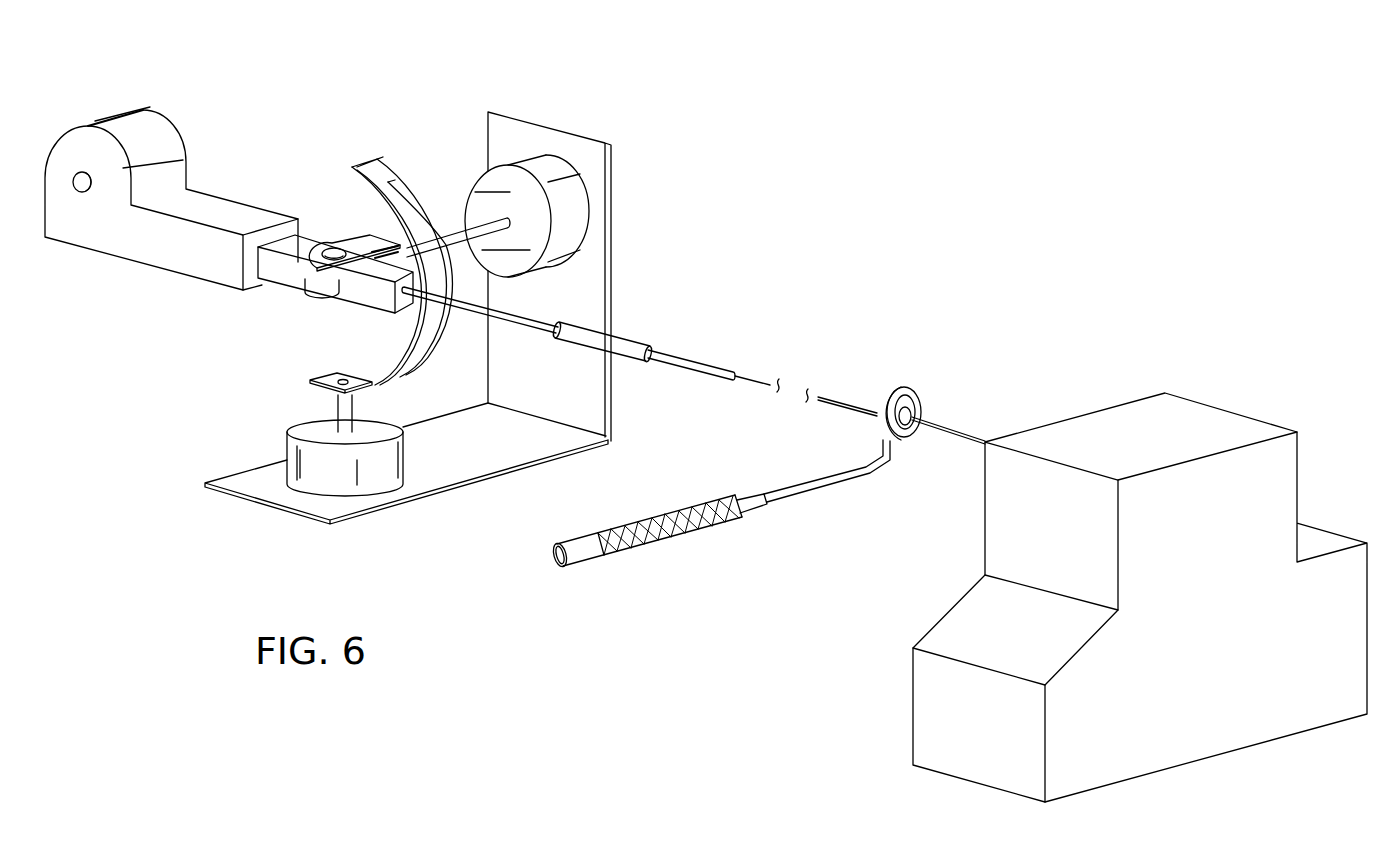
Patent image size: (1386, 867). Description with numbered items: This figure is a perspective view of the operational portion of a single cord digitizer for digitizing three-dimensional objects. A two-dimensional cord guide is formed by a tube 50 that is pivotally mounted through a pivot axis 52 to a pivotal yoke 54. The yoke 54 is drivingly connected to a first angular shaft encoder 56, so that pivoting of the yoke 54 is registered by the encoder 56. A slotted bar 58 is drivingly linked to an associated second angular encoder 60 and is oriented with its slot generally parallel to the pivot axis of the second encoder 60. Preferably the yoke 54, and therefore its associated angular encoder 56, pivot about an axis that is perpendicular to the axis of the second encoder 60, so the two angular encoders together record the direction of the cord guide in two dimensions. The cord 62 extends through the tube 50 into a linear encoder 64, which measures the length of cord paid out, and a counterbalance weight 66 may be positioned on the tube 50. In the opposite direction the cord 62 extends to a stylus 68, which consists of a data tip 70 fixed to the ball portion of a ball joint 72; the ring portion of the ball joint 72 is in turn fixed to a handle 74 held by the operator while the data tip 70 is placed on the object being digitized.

The tube 50 is at (703, 353).
The pivot axis 52 is at (335, 250).
The pivotal yoke 54 is at (360, 247).
The first angular shaft encoder 56 is at (558, 165).
The slotted bar 58 is at (405, 372).
The second angular encoder 60 is at (290, 456).
The cord 62 is at (822, 402).
The linear encoder 64 is at (158, 118).
The counterbalance weight 66 is at (622, 327).
The stylus 68 is at (958, 428).
The data tip 70 is at (982, 442).
The ball joint 72 is at (900, 383).
The handle 74 is at (636, 542).